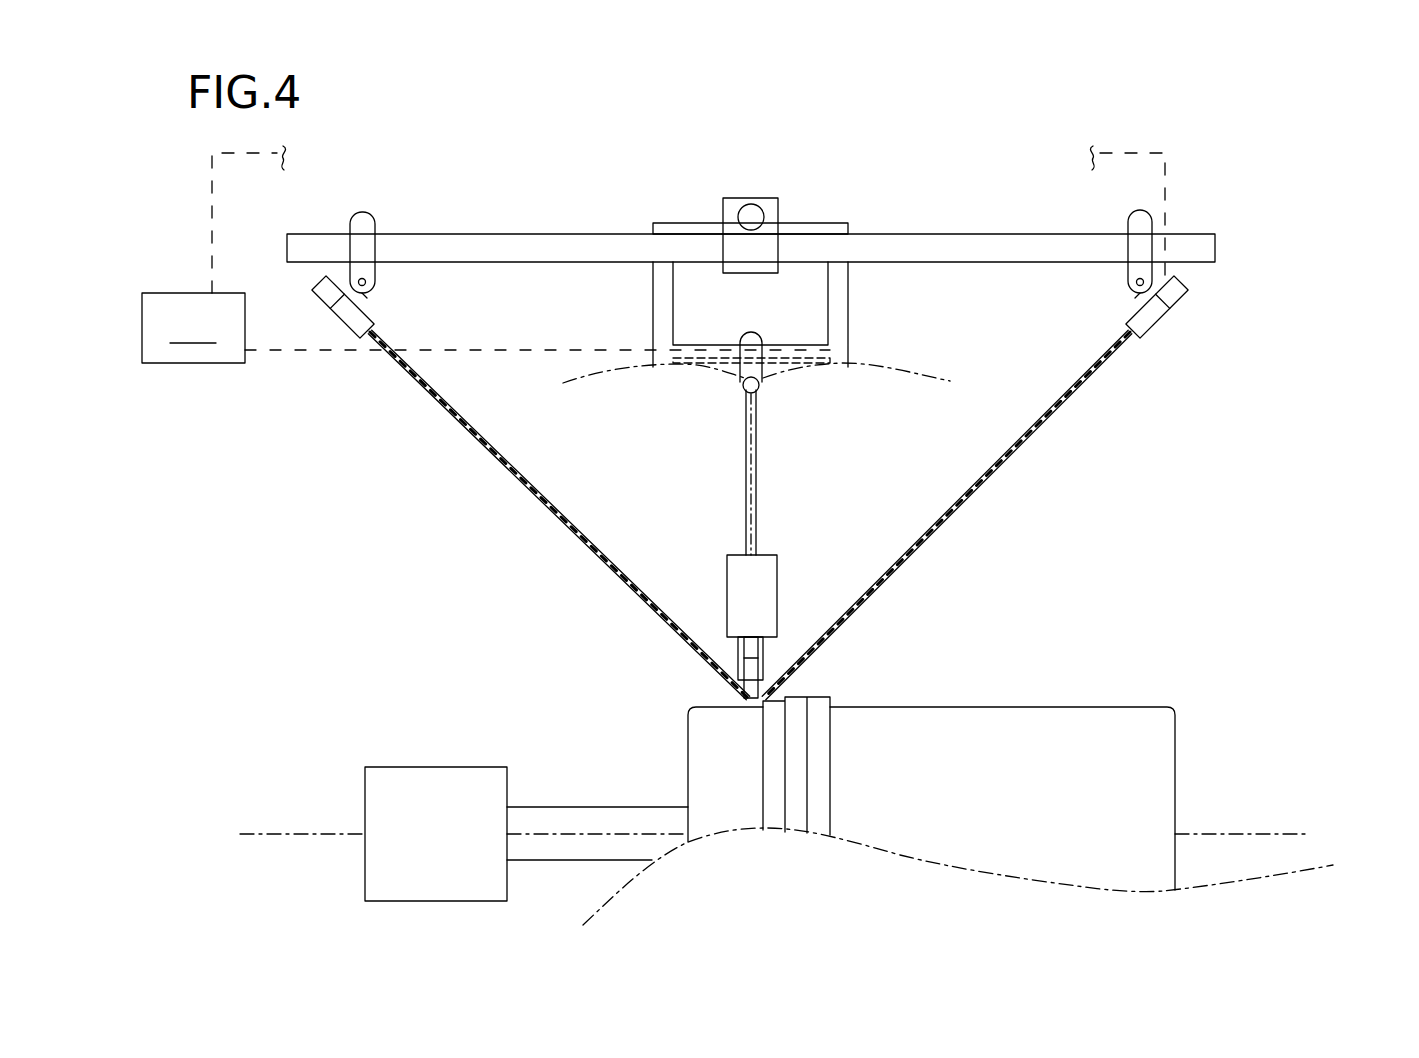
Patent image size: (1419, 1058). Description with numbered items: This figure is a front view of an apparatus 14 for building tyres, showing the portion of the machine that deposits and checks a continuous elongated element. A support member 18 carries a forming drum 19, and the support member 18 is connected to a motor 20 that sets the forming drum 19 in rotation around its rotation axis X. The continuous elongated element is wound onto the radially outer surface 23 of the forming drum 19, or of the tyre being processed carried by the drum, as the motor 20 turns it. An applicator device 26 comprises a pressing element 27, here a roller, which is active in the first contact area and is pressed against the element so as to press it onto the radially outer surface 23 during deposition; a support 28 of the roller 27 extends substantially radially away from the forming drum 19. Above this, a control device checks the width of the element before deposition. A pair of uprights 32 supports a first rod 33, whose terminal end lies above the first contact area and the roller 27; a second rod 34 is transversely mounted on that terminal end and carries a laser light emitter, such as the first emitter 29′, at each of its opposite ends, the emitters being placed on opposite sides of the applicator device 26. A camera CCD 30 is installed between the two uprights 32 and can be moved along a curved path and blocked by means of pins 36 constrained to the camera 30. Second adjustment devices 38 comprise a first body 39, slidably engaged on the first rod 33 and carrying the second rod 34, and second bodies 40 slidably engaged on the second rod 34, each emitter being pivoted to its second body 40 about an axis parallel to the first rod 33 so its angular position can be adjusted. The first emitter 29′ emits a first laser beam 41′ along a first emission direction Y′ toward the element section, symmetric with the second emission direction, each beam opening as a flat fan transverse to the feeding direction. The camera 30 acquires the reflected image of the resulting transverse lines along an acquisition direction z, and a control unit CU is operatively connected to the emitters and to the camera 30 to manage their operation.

The apparatus 14 is at (1263, 180).
The support member 18 is at (555, 818).
The forming drum 19 is at (682, 713).
The motor 20 is at (412, 798).
The radially outer surface 23 is at (725, 753).
The applicator device 26 is at (717, 587).
The pressing element 27 is at (763, 677).
The support 28 is at (777, 565).
The first emitter 29′ is at (340, 330).
The camera CCD 30 is at (763, 367).
The uprights 32 is at (653, 310).
The first rod 33 is at (752, 216).
The second rod 34 is at (1005, 233).
The pins 36 is at (710, 340).
The second adjustment devices 38 is at (618, 200).
The first body 39 is at (777, 198).
The second bodies 40 is at (361, 217).
The first laser beam 41′ is at (448, 415).
The control unit CU is at (653, 254).
The rotation axis X is at (1255, 834).
The first emission direction Y′ is at (518, 485).
The acquisition direction z is at (752, 447).